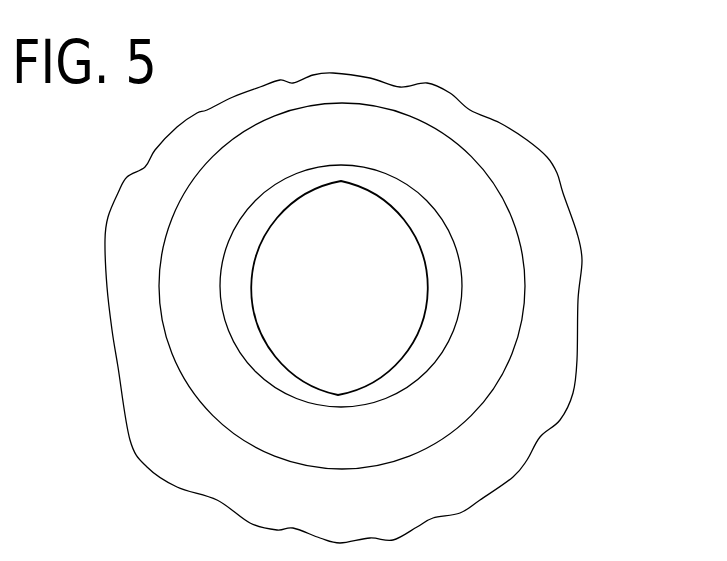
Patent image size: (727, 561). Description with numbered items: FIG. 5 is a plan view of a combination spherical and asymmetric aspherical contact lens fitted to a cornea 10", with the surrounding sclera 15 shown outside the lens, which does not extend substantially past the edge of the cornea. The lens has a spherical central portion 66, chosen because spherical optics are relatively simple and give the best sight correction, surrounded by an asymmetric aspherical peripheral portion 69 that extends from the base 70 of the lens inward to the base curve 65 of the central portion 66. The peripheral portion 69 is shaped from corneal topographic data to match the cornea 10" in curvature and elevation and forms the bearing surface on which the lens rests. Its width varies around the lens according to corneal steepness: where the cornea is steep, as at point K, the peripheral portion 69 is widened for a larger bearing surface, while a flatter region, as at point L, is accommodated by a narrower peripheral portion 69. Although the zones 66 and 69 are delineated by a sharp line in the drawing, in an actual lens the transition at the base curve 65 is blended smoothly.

The sclera 15 is at (557, 410).
The base 70 is at (432, 204).
The peripheral portion 69 is at (233, 278).
The base curve 65 is at (250, 298).
The spherical central portion 66 is at (380, 293).
The cornea 10 is at (478, 375).
The point L is at (342, 181).
The point K is at (429, 292).